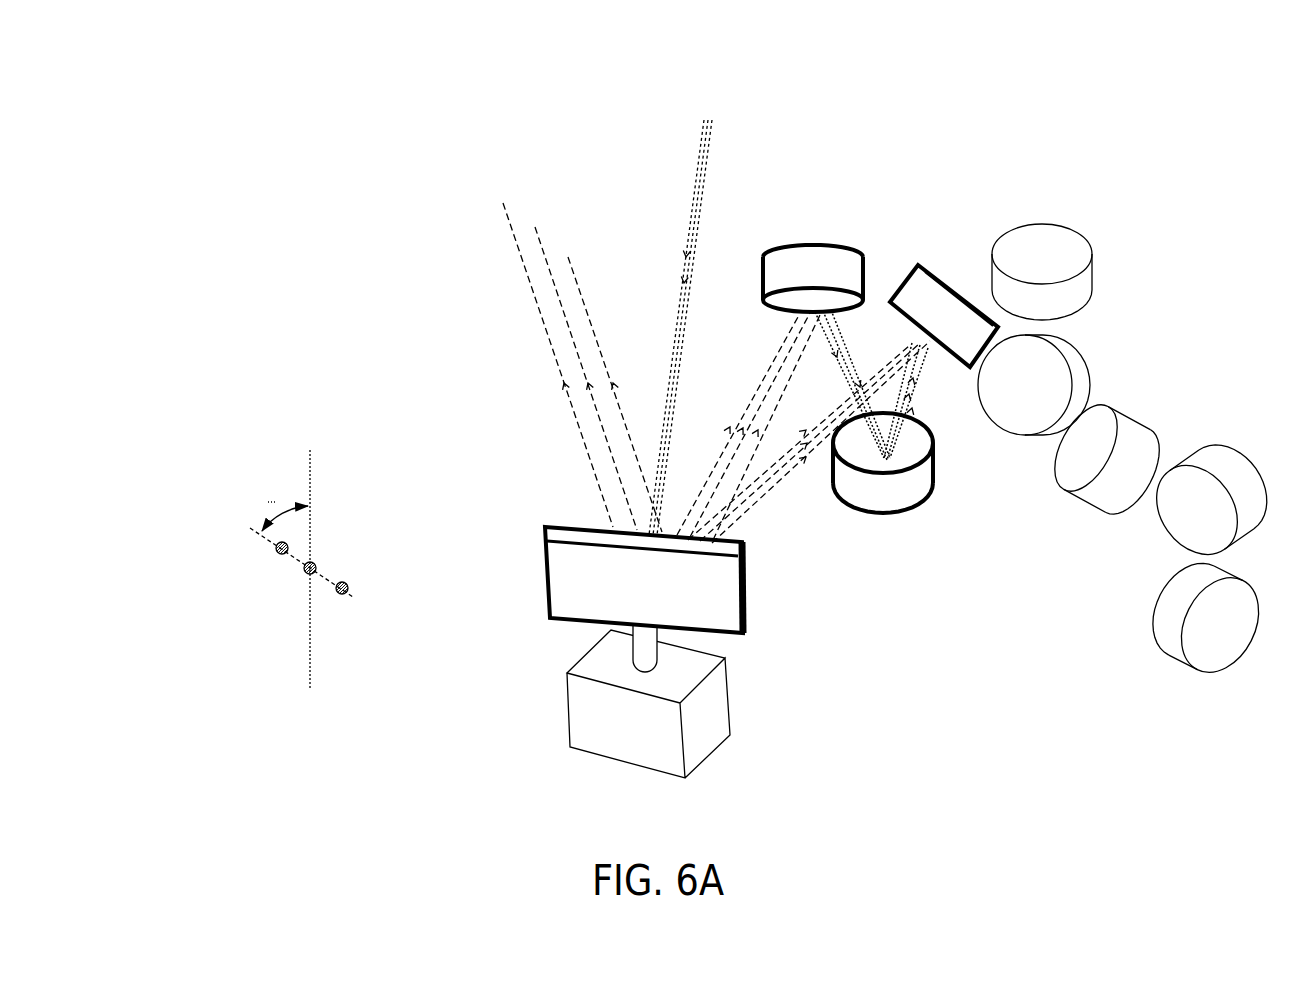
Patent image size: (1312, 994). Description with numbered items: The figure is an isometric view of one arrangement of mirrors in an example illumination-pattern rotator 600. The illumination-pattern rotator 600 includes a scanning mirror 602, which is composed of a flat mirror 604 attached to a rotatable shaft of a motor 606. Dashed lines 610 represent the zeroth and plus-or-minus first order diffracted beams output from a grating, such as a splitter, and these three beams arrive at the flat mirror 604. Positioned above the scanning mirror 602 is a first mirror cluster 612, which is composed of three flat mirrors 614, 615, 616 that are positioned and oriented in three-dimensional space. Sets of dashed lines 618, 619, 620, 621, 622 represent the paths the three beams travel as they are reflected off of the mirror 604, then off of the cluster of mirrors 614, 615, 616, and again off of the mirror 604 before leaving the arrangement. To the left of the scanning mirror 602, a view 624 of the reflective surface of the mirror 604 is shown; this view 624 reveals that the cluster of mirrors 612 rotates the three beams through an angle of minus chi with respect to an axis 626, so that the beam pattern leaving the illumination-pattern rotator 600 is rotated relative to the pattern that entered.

The illumination-pattern rotator 600 is at (1201, 126).
The scanning mirror 602 is at (766, 683).
The flat mirror 604 is at (600, 577).
The motor 606 is at (600, 740).
The dashed lines 610 is at (720, 178).
The mirror cluster 1 612 is at (889, 182).
The flat mirror 614 is at (817, 243).
The flat mirror 615 is at (893, 513).
The flat mirror 616 is at (940, 270).
The dashed lines 618 is at (750, 391).
The dashed lines 619 is at (859, 371).
The dashed lines 620 is at (929, 402).
The dashed lines 621 is at (770, 505).
The dashed lines 622 is at (553, 382).
The view of the reflective surface of the mirror 624 is at (382, 475).
The axis 626 is at (310, 450).